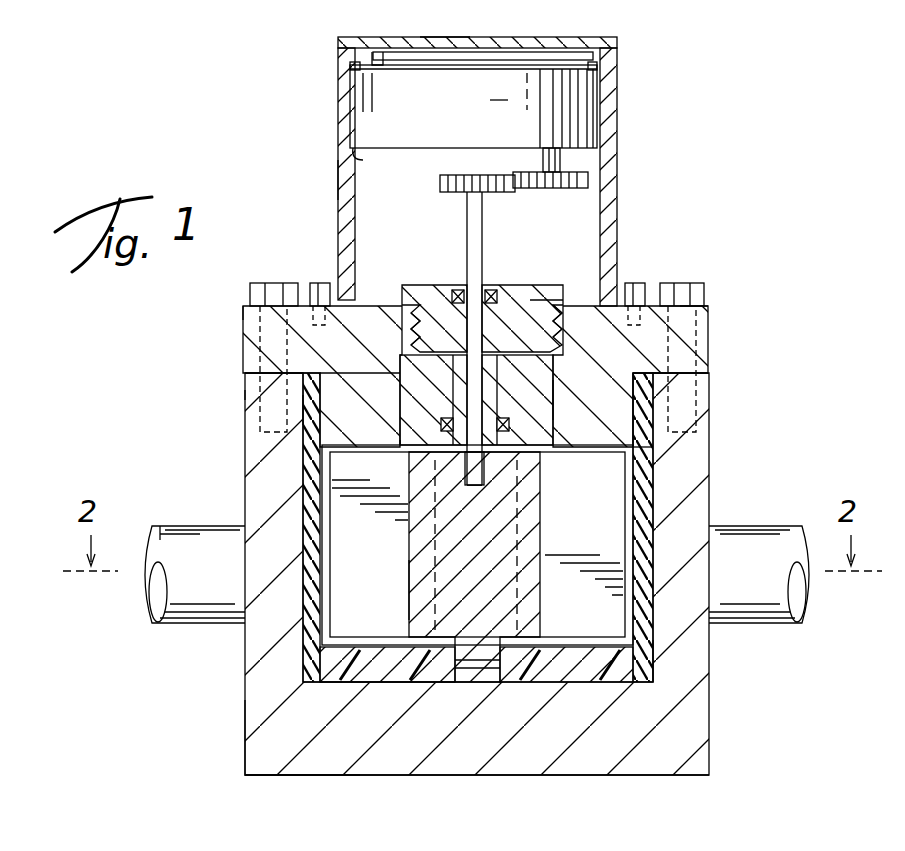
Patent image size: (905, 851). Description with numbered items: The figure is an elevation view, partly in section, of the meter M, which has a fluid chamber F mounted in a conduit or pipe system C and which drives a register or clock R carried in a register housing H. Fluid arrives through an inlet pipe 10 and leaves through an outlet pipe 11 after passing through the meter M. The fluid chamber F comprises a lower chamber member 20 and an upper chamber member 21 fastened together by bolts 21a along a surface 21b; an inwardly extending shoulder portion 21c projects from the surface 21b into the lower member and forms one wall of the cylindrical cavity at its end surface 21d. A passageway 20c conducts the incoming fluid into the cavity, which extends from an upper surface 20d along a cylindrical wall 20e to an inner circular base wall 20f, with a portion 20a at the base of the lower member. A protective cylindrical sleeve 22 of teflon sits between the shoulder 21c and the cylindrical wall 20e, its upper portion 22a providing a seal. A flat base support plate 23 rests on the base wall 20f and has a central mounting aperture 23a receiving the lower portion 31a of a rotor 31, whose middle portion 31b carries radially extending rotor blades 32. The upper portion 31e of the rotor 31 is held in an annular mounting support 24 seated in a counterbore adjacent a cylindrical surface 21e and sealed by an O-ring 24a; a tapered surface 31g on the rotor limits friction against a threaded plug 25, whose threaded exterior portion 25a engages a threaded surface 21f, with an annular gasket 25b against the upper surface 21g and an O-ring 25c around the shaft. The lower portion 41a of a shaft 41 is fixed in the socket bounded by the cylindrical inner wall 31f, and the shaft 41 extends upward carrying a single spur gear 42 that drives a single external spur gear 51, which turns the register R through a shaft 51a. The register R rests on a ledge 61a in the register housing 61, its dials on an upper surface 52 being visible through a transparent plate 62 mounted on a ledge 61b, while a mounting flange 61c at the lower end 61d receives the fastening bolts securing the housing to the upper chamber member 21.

The inlet pipe 10 is at (190, 628).
The outlet pipe 11 is at (740, 530).
The lower chamber member 20 is at (690, 672).
The base bottom portion 20a is at (210, 848).
The passageway 20c is at (291, 813).
The upper surface 20d is at (243, 372).
The cylindrical wall 20e is at (653, 650).
The inner circular base wall 20f is at (380, 682).
The upper chamber member 21 is at (708, 357).
The bolts 21a is at (252, 283).
The surface 21b is at (700, 373).
The inwardly extending shoulder portion 21c is at (640, 400).
The end surface 21d is at (652, 462).
The cylindrical surface 21e is at (553, 398).
The threaded surface 21f is at (526, 322).
The upper surface 21g is at (700, 318).
The protective cylindrical sleeve 22 is at (660, 680).
The upper portion of sleeve 22a is at (320, 410).
The base support plate 23 is at (578, 682).
The mounting aperture 23a is at (480, 672).
The annular mounting support 24 is at (553, 378).
The O-ring 24a is at (400, 445).
The threaded plug 25 is at (445, 285).
The threaded exterior portion 25a is at (411, 320).
The annular gasket 25b is at (553, 305).
The O-ring 25c is at (491, 290).
The rotor 31 is at (552, 529).
The lower portion of rotor 31a is at (468, 668).
The middle portion of rotor 31b is at (409, 586).
The upper portion of rotor 31e is at (553, 428).
The cylindrical inner wall 31f is at (484, 468).
The tapered surface 31g is at (400, 372).
The rotor blades 32 is at (372, 558).
The shaft 41 is at (467, 222).
The lower portion of shaft 41a is at (484, 480).
The single spur gear 42 is at (440, 184).
The external spur gear 51 is at (588, 180).
The shaft 51a is at (560, 158).
The upper surface of register 52 is at (512, 58).
The register housing 61 is at (338, 200).
The shelf or ledge 61a is at (363, 156).
The ledge or shelf 61b is at (380, 64).
The mounting flange 61c is at (316, 283).
The lower end 61d is at (636, 283).
The transparent plate 62 is at (432, 37).
The register housing H is at (298, 180).
The register R is at (499, 90).
The meter M is at (134, 308).
The fluid chamber F is at (230, 400).
The conduit C is at (160, 496).